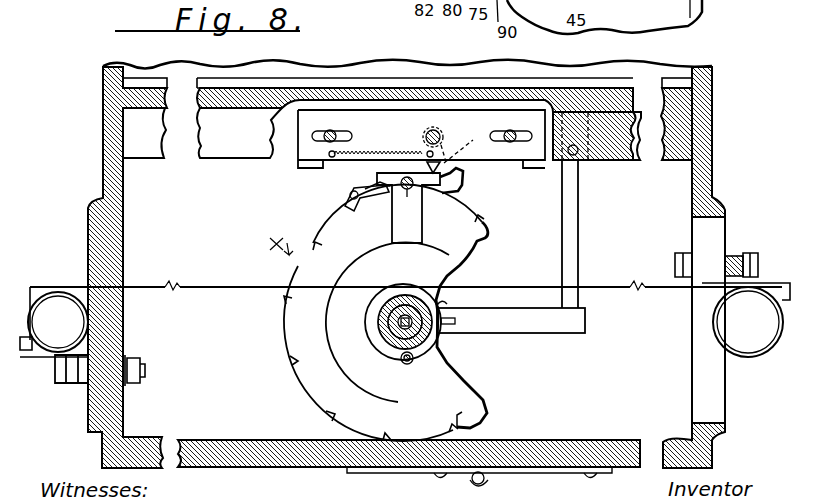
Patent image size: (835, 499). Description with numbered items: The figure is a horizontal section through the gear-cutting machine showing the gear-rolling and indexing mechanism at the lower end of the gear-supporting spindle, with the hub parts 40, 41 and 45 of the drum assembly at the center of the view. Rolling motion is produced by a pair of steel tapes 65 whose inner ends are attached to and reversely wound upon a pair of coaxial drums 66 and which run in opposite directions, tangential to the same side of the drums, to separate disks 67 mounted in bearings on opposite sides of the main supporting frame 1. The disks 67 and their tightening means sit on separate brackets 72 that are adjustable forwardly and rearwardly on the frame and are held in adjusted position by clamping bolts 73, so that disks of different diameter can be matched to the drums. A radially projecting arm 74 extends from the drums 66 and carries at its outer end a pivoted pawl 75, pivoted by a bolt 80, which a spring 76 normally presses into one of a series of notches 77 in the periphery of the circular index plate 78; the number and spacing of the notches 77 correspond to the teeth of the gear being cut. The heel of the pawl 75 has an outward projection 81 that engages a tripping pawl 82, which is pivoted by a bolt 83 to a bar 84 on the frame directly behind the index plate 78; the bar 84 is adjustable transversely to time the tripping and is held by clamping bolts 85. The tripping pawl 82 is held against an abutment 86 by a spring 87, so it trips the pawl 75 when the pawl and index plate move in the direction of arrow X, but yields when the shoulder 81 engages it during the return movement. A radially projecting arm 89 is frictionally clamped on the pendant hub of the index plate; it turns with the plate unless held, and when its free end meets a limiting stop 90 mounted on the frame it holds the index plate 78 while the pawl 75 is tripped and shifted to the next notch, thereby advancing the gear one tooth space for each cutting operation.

The main supporting frame 1 is at (96, 219).
The shaft hub 40 is at (392, 340).
The pin 41 is at (402, 362).
The shaft 45 is at (408, 318).
The steel tapes 65 is at (406, 274).
The coaxial drums 66 is at (378, 322).
The disks 67 is at (58, 297).
The brackets 72 is at (745, 243).
The clamping bolts 73 is at (141, 368).
The radially projecting arm 74 is at (414, 224).
The pivoted pawl 75 is at (350, 202).
The spring 76 is at (358, 208).
The notches 77 is at (319, 242).
The index plate 78 is at (369, 328).
The bolt 80 is at (405, 196).
The outward projection 81 is at (466, 180).
The tripping pawl 82 is at (453, 156).
The bolt 83 is at (440, 132).
The bar 84 is at (412, 128).
The clamping bolts 85 is at (422, 127).
The abutment 86 is at (381, 149).
The spring 87 is at (338, 160).
The radially projecting arm 89 is at (494, 325).
The limiting stop 90 is at (575, 300).